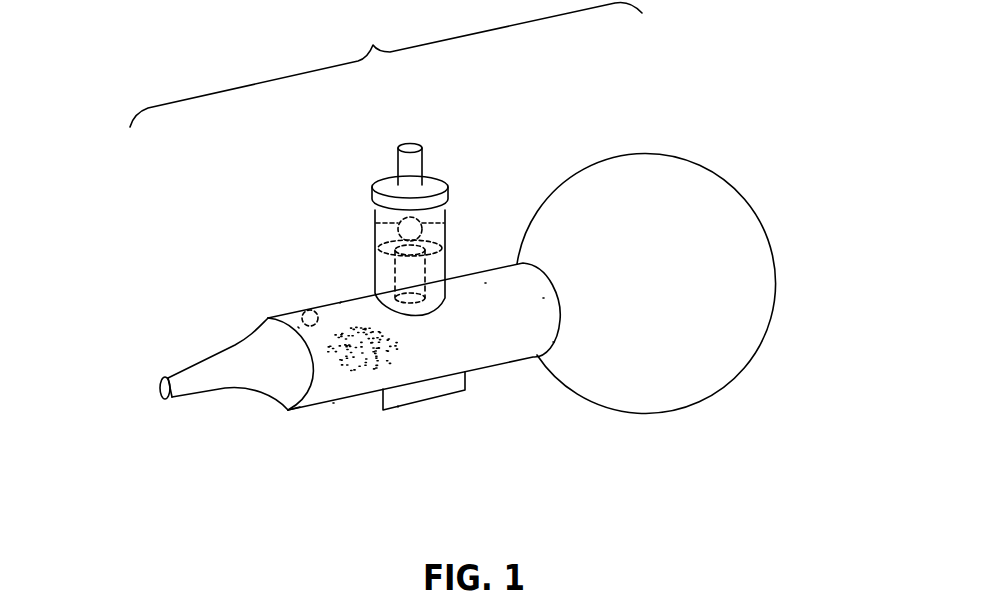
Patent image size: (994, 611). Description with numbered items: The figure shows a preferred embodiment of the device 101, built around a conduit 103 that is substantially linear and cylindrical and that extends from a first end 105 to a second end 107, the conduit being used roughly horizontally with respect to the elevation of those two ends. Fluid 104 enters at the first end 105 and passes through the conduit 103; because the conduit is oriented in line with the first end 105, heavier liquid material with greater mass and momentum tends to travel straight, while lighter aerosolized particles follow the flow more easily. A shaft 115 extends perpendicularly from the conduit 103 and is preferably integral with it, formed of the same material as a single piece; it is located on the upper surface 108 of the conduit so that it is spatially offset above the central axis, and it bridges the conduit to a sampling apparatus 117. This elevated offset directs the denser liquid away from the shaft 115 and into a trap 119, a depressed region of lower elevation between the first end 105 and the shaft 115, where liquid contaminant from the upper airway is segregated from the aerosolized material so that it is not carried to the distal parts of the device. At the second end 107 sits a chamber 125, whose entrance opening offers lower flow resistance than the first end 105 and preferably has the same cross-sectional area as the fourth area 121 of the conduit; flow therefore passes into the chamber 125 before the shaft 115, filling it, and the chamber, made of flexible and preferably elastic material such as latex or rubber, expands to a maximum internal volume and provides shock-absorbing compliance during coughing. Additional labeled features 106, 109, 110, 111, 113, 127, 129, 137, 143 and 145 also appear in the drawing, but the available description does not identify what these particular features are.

The device 101 is at (386, 64).
The conduit 103 is at (500, 352).
The fluid 104 is at (360, 337).
The first end 105 is at (298, 327).
The vent opening 106 is at (312, 308).
The second end 107 is at (553, 342).
The upper surface 108 is at (485, 283).
The tapered neck 109 is at (313, 380).
The bottom wall 110 is at (333, 403).
The base 111 is at (423, 340).
The outer surface 113 is at (340, 303).
The shaft 115 is at (430, 229).
The sampling apparatus 117 is at (384, 184).
The trap 119 is at (399, 414).
The fourth area 121 is at (543, 298).
The chamber 125 is at (733, 303).
The valve assembly 127 is at (448, 150).
The fluid level 129 is at (376, 223).
The nozzle tube 137 is at (193, 383).
The outlet opening 143 is at (157, 391).
The neck passage 145 is at (273, 375).